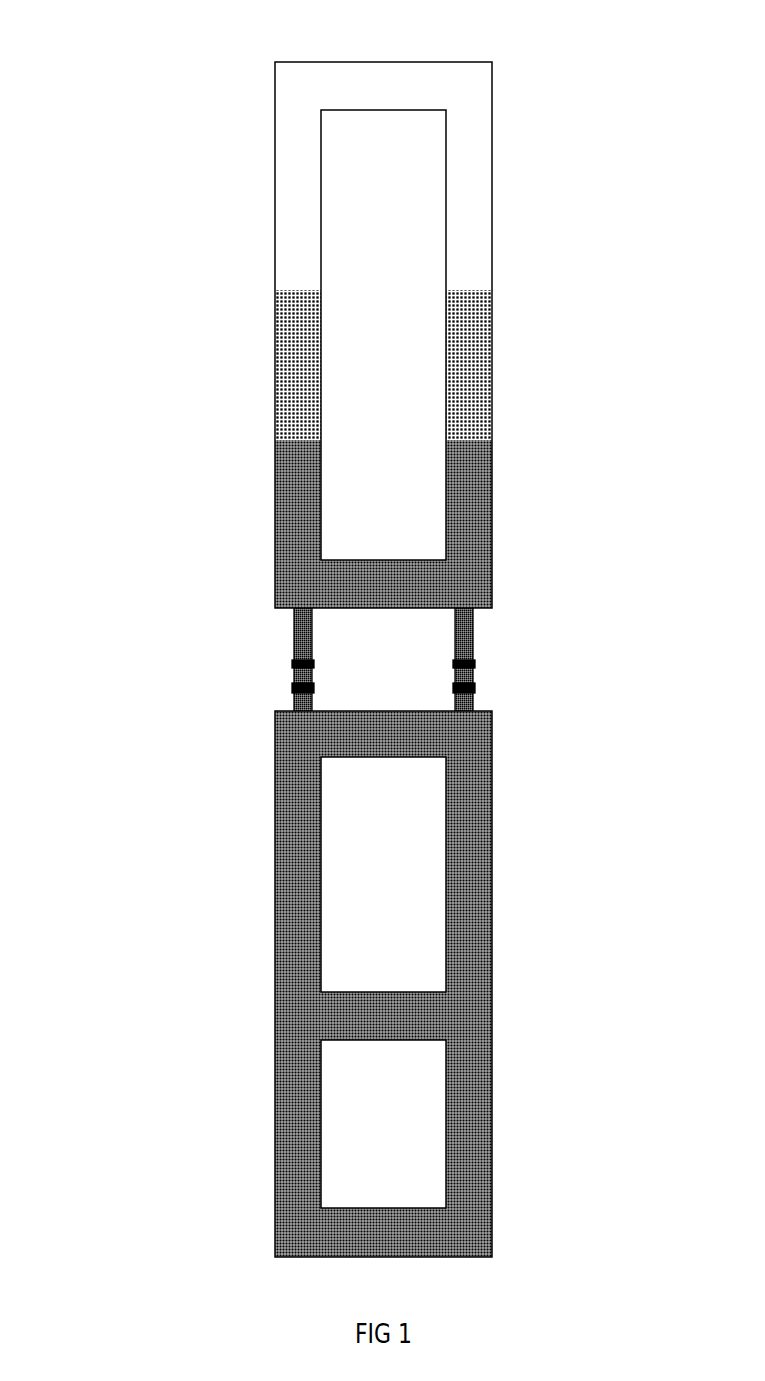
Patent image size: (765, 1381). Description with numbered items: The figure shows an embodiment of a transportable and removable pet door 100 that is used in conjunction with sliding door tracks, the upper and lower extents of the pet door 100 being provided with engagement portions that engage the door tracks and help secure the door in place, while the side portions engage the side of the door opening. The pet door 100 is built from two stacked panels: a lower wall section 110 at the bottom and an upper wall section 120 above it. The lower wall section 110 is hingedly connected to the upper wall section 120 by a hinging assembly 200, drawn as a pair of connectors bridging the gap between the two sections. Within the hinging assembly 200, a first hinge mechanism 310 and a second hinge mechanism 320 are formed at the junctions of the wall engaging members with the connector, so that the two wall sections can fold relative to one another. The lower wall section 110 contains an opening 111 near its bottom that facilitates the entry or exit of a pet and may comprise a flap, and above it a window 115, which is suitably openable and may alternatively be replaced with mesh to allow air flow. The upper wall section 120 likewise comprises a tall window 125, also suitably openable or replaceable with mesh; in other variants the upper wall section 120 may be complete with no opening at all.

The pet door 100 is at (162, 148).
The lower wall section 110 is at (468, 977).
The opening 111 is at (320, 1121).
The window 115 is at (338, 870).
The upper wall section 120 is at (475, 263).
The window 125 is at (332, 413).
The hinging assembly 200 is at (472, 652).
The first hinge mechanism 310 is at (489, 662).
The second hinge mechanism 320 is at (489, 693).